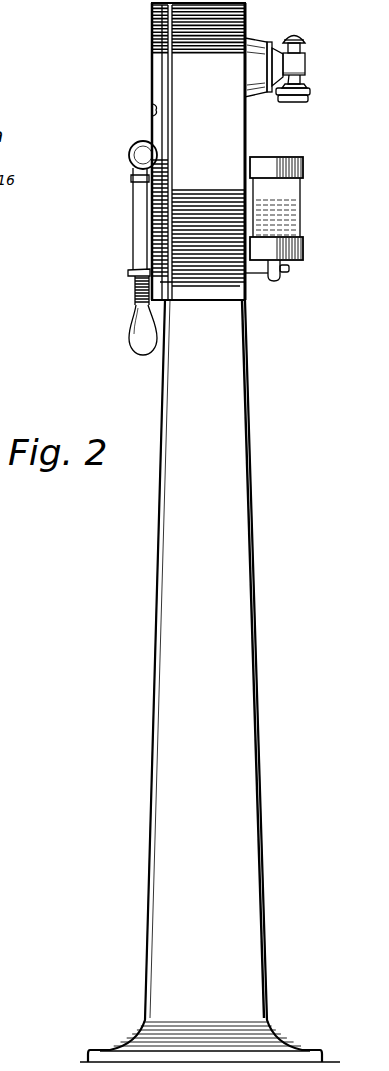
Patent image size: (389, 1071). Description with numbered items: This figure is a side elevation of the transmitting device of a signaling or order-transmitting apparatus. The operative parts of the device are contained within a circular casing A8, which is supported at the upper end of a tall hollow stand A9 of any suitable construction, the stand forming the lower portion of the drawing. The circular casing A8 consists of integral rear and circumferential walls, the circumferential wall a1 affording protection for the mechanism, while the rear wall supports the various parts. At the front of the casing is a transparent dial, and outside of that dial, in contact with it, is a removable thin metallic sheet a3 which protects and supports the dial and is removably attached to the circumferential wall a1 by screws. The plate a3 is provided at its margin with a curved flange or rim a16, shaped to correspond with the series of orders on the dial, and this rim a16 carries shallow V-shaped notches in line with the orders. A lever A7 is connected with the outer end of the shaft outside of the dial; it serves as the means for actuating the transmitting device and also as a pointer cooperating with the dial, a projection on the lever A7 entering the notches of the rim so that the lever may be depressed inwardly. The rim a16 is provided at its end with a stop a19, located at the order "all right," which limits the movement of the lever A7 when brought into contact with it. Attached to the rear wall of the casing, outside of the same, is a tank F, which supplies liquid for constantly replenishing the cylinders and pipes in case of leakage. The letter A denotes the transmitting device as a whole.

The horn A is at (304, 303).
The hollow stand A9 is at (206, 660).
The circular casing A8 is at (198, 151).
The circumferential wall a1 is at (196, 152).
The removable thin metallic sheet a3 is at (167, 88).
The curved flange or rim a16 is at (160, 120).
The stop a19 is at (138, 272).
The lever A7 is at (138, 318).
The tank F is at (300, 203).